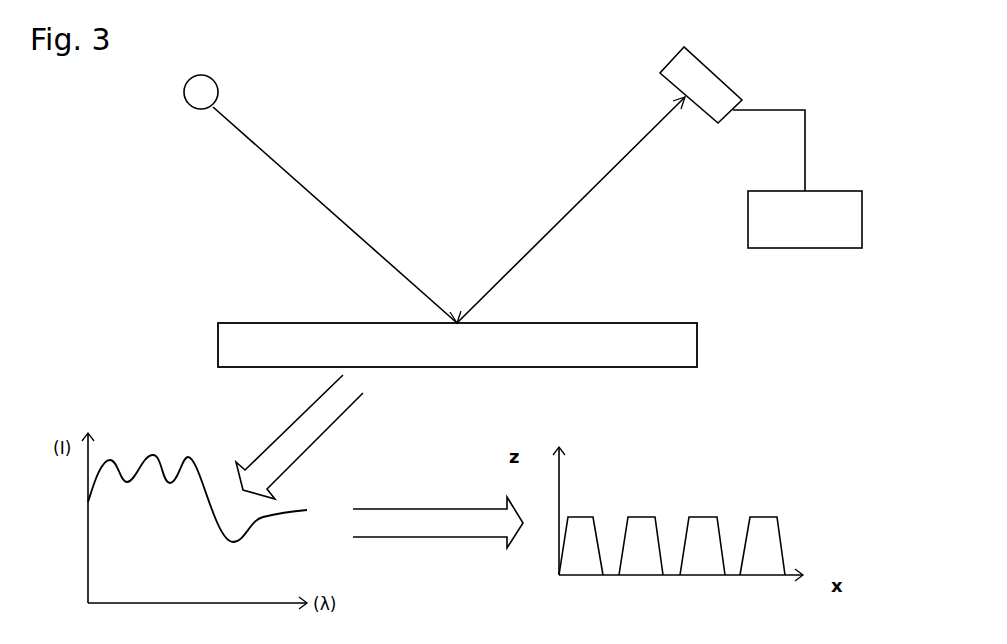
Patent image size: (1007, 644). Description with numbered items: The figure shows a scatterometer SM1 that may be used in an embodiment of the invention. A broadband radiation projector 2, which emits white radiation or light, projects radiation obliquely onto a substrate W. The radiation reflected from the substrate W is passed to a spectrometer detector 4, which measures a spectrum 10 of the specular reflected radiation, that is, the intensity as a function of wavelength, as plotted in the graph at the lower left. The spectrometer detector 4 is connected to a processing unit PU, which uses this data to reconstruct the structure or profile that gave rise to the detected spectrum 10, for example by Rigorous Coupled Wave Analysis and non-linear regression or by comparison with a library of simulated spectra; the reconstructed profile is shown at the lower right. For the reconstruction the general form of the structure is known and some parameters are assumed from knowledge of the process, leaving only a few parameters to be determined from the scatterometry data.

The broadband radiation projector 2 is at (218, 88).
The spectrometer detector 4 is at (733, 88).
The spectrum 10 is at (603, 128).
The scatterometer SM1 is at (170, 203).
The substrate W is at (447, 356).
The processing unit PU is at (797, 179).